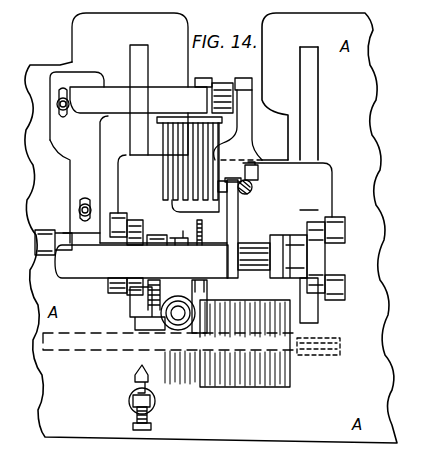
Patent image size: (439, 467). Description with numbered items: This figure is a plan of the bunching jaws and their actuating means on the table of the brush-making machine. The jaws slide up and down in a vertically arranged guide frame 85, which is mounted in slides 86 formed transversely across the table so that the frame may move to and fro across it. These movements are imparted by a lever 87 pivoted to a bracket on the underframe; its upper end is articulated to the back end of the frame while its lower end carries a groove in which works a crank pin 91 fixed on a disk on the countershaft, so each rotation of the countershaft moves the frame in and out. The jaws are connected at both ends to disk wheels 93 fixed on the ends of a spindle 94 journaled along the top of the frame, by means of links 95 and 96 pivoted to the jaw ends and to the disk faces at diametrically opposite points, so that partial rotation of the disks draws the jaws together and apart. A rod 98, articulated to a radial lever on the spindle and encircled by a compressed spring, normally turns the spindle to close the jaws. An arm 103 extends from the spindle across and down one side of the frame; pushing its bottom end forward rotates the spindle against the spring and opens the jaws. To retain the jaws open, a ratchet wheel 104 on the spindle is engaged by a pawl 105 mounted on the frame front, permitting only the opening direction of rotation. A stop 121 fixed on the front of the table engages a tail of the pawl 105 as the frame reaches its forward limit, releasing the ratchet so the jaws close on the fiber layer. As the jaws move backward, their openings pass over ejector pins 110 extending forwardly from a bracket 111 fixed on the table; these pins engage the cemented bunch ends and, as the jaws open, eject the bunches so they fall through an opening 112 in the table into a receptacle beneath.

The bracket 111 is at (138, 100).
The slides 86 is at (139, 133).
The lever 87 is at (232, 86).
The opening 112 is at (285, 410).
The ejector pins 110 is at (182, 168).
The link 96 is at (118, 215).
The disk wheels 93 is at (132, 228).
The ratchet wheel 104 is at (195, 222).
The arm 103 is at (141, 261).
The crank pin 91 is at (236, 225).
The rod 98 is at (246, 195).
The guide frame 85 is at (270, 242).
The link 95 is at (113, 298).
The spindle 94 is at (300, 322).
The pawl 105 is at (203, 388).
The stop 121 is at (136, 375).